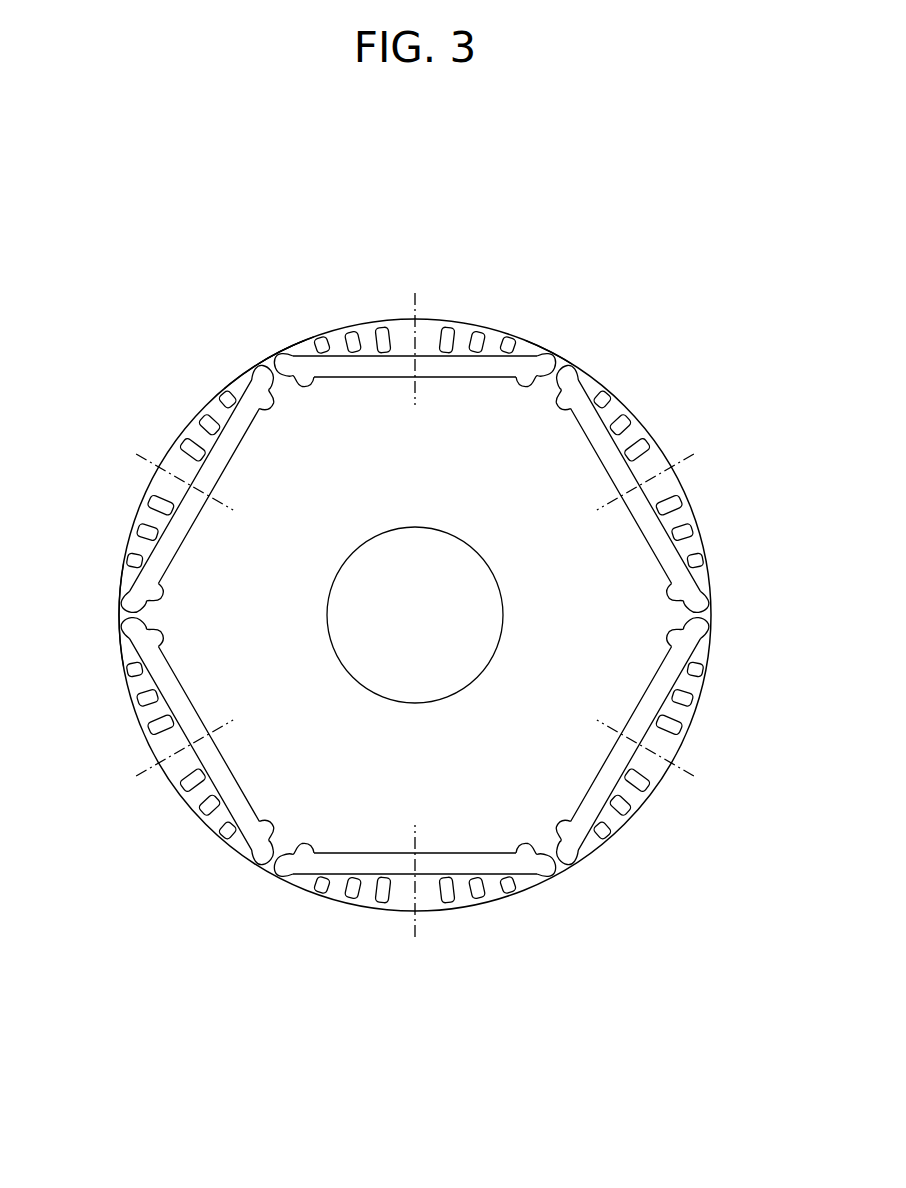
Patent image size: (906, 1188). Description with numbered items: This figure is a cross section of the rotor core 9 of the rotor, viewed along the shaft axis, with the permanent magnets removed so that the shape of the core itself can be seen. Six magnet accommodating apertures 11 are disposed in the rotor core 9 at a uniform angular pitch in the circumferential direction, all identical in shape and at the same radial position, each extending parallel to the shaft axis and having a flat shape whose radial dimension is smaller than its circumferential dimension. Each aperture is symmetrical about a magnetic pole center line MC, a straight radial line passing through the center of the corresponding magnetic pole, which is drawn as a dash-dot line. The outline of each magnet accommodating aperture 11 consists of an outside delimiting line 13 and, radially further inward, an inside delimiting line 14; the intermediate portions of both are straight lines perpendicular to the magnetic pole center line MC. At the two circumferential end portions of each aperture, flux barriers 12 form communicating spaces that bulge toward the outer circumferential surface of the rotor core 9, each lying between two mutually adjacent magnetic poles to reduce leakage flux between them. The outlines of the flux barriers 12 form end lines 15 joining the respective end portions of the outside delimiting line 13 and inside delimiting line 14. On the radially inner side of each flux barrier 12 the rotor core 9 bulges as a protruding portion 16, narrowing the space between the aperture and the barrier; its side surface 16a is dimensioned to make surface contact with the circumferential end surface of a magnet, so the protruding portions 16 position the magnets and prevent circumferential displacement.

The rotor core 9 is at (202, 388).
The magnet accommodating aperture 11 is at (170, 528).
The flux barrier 12 is at (272, 362).
The outside delimiting line 13 is at (414, 318).
The inside delimiting line 14 is at (415, 329).
The end line 15 is at (281, 348).
The protruding portion 16 is at (413, 334).
The side surface 16a is at (415, 329).
The magnetic pole center line MC is at (418, 302).